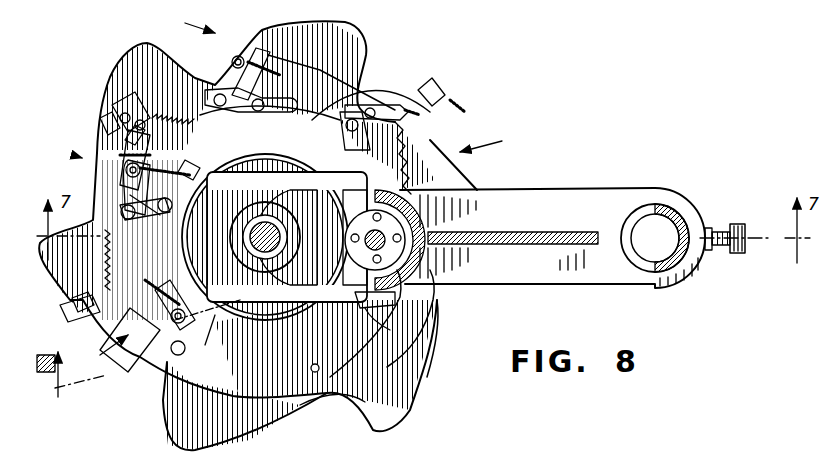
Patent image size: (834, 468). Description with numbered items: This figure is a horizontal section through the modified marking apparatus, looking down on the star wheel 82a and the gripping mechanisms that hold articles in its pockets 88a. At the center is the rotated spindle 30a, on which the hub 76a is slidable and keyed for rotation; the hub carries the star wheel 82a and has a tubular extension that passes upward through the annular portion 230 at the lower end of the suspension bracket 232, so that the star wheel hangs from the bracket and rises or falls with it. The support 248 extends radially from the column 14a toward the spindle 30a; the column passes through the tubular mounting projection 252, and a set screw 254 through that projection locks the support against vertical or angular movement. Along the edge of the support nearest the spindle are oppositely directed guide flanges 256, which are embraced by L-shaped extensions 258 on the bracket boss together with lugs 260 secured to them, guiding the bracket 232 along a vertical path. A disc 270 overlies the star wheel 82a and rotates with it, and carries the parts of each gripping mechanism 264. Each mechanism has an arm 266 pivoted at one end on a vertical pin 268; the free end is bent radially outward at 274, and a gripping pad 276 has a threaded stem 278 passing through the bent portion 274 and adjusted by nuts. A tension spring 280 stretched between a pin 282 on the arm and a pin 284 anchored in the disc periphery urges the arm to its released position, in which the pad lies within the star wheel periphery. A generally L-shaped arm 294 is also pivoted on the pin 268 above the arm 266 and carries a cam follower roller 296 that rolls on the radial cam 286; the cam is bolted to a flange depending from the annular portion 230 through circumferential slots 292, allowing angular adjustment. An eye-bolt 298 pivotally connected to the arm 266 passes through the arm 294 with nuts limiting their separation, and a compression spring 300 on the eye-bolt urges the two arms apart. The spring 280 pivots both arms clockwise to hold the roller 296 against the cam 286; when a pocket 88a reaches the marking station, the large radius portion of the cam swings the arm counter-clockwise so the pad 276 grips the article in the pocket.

The column 14a is at (683, 275).
The spindle 30a is at (252, 242).
The hub 76a is at (272, 220).
The star wheel 82a is at (420, 360).
The pocket 88a is at (360, 70).
The annular portion 230 is at (258, 187).
The suspension bracket 232 is at (340, 313).
The support 248 is at (550, 190).
The tubular mounting projection 252 is at (712, 225).
The set screw 254 is at (730, 224).
The guide flanges 256 is at (405, 206).
The L-shaped extensions 258 is at (428, 345).
The lugs 260 is at (430, 318).
The gripping mechanism 264 is at (286, 184).
The arm 266 is at (128, 184).
The vertical pin 268 is at (120, 212).
The disc 270 is at (288, 395).
The bent portion 274 is at (112, 108).
The gripping pad 276 is at (100, 124).
The threaded stem 278 is at (115, 112).
The tension spring 280 is at (160, 112).
The pin 282 is at (148, 128).
The pin 284 is at (170, 78).
The radial cam 286 is at (340, 128).
The circumferential slots 292 is at (278, 320).
The L-shaped arm 294 is at (120, 238).
The cam follower roller 296 is at (290, 125).
The eye-bolt 298 is at (195, 163).
The compression spring 300 is at (140, 158).